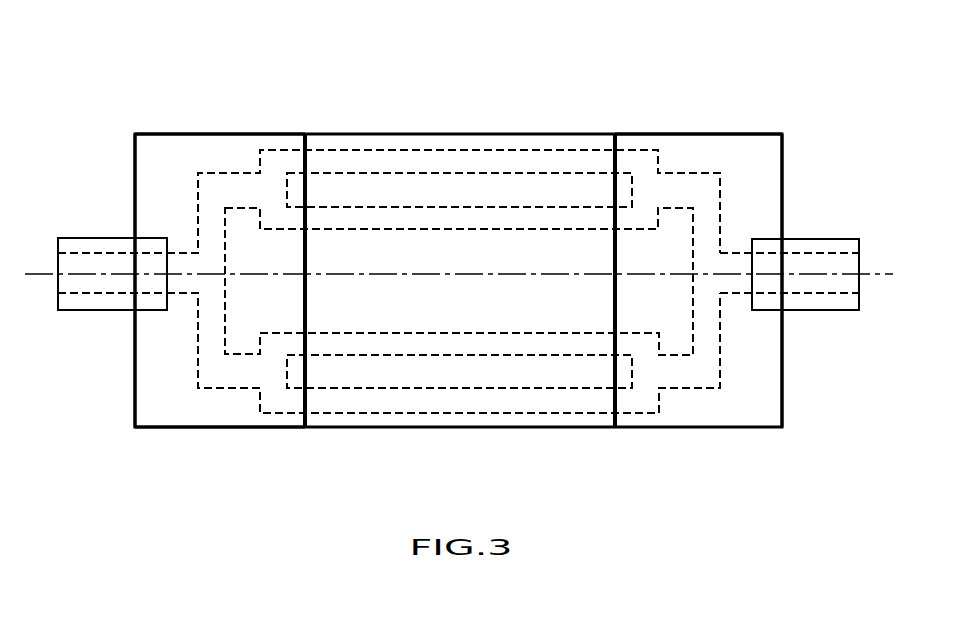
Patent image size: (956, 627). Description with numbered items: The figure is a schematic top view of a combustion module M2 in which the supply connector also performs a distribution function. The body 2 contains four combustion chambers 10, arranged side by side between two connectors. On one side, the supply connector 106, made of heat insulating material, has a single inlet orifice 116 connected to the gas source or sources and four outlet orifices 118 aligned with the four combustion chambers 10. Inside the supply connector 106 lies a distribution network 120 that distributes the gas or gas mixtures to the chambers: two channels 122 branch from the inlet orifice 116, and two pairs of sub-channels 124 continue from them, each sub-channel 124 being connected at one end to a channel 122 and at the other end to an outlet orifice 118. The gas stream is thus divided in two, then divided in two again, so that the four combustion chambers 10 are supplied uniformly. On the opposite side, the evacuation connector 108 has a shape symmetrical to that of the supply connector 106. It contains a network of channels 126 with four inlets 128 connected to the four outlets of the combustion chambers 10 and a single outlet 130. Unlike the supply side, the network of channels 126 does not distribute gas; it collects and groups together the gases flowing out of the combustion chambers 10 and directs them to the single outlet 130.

The body 2 is at (476, 131).
The combustion chambers 10 is at (419, 160).
The supply connector 106 is at (774, 119).
The evacuation connector 108 is at (226, 107).
The inlet orifice 116 is at (752, 250).
The outlet orifices 118 is at (615, 220).
The distribution network 120 is at (758, 172).
The channels 122 is at (705, 218).
The sub-channels 124 is at (666, 157).
The network of channels 126 is at (220, 408).
The inlets 128 is at (305, 220).
The outlet 130 is at (172, 253).
The combustion module M2 is at (530, 72).